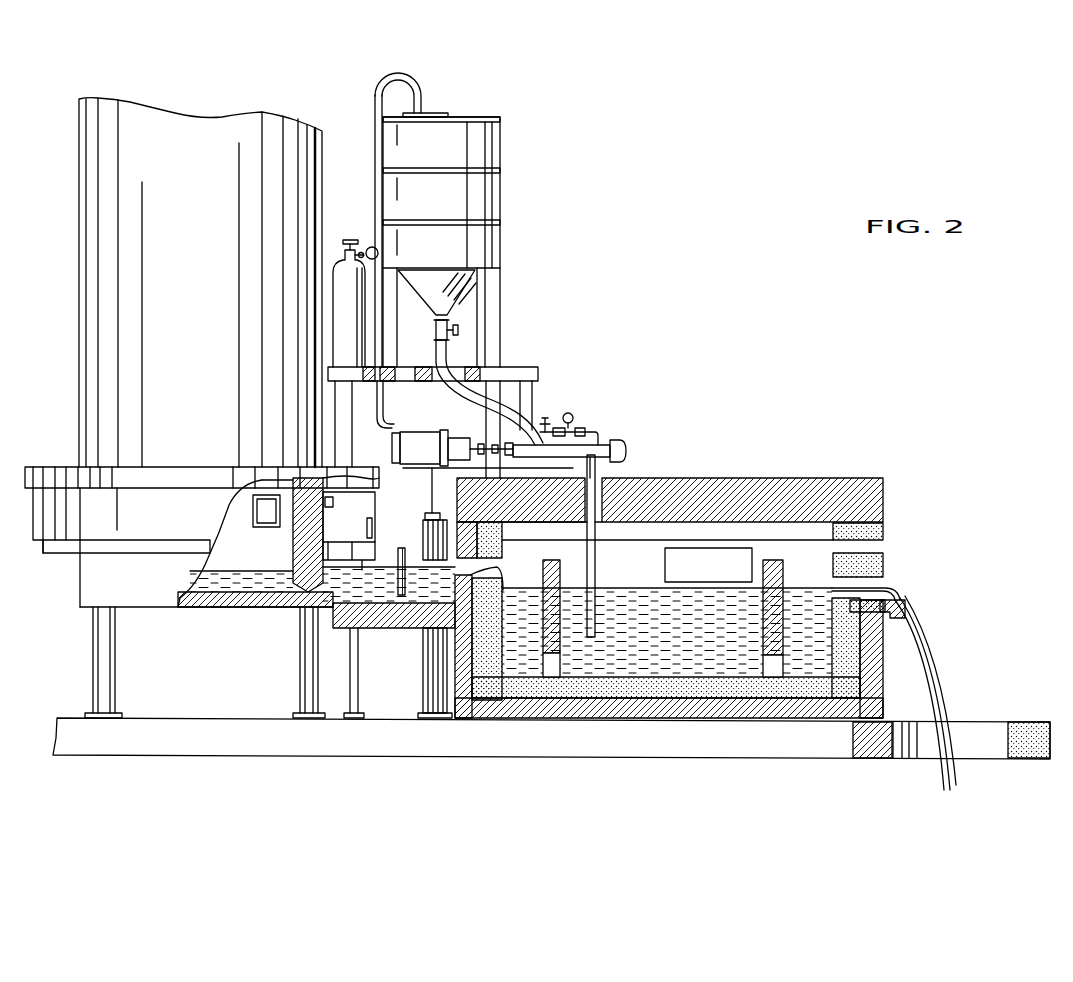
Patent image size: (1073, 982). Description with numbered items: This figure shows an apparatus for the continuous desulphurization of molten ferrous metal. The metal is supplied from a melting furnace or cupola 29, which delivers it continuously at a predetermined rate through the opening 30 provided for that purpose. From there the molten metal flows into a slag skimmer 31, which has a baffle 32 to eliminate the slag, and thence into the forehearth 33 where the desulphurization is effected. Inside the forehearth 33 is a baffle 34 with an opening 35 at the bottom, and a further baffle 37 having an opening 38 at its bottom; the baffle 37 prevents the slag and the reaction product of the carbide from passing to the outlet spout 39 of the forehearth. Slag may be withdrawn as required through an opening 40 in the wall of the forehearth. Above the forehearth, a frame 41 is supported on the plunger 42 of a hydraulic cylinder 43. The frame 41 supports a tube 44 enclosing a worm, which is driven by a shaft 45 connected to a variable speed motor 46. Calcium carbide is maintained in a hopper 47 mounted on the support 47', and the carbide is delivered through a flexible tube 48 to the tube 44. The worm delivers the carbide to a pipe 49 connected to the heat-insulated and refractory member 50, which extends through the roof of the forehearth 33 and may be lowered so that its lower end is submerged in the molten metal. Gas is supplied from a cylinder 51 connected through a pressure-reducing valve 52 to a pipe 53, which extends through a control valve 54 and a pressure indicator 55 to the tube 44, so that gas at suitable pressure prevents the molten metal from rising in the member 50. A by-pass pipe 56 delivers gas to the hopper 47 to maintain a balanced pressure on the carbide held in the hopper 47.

The melting furnace or cupola 29 is at (84, 297).
The opening 30 is at (300, 610).
The slag skimmer 31 is at (388, 610).
The baffle 32 is at (387, 567).
The forehearth 33 is at (672, 675).
The baffle 34 is at (545, 577).
The opening 35 is at (553, 668).
The baffle 37 is at (783, 578).
The opening 38 is at (775, 668).
The outlet spout 39 is at (897, 595).
The opening 40 is at (668, 565).
The frame 41 is at (553, 480).
The plunger 42 is at (431, 486).
The hydraulic cylinder 43 is at (427, 550).
The tube 44 is at (598, 448).
The shaft 45 is at (480, 447).
The variable speed motor 46 is at (412, 433).
The hopper 47 is at (464, 240).
The support 47' is at (457, 411).
The flexible tube 48 is at (442, 372).
The pipe 49 is at (598, 468).
The heat-insulated and refractory member 50 is at (596, 548).
The cylinder 51 is at (343, 303).
The pressure-reducing valve 52 is at (370, 247).
The pipe 53 is at (378, 277).
The control valve 54 is at (545, 418).
The pressure indicator 55 is at (575, 418).
The by-pass pipe 56 is at (376, 92).